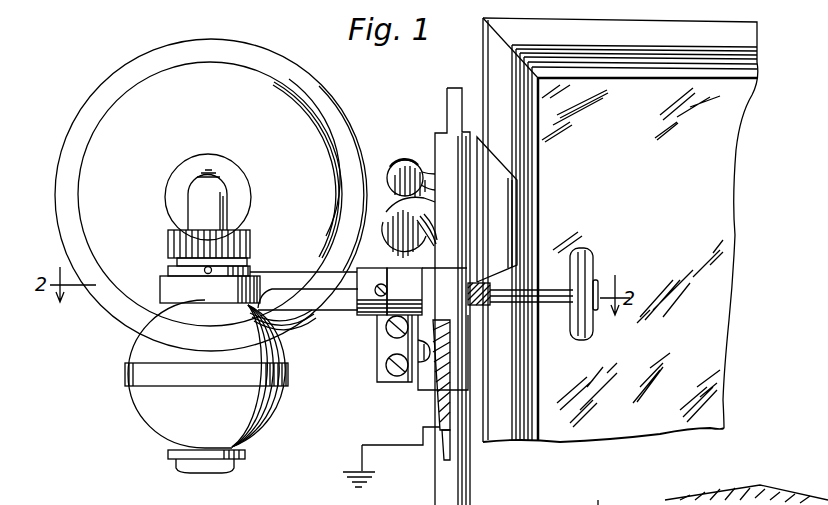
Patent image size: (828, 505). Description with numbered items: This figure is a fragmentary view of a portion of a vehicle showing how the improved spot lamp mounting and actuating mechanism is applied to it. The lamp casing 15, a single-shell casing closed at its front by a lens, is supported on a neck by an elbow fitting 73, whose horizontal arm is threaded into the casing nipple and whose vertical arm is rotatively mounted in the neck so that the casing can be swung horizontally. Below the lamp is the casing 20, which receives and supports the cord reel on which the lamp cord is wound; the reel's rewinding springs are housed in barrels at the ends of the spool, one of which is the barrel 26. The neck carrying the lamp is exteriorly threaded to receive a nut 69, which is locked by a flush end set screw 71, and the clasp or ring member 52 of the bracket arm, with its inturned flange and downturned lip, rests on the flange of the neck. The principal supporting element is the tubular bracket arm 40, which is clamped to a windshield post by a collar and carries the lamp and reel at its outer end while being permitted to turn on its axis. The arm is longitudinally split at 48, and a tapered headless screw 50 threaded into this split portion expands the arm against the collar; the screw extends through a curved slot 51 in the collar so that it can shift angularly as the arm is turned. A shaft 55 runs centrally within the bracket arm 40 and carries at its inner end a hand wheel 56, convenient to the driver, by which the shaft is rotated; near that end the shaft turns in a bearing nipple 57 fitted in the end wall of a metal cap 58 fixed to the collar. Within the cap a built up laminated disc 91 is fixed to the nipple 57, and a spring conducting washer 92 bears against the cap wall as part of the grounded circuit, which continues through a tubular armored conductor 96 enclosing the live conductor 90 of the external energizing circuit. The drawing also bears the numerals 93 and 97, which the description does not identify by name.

The lamp casing 15 is at (307, 142).
The elbow fitting 73 is at (198, 195).
The barrel 26 is at (250, 248).
The nut 69 is at (168, 271).
The flush end set screw 71 is at (208, 276).
The clasp or ring member 52 is at (170, 288).
The casing 20 is at (266, 420).
The tubular bracket arm 40 is at (341, 302).
The longitudinal split 48 is at (320, 290).
The tapered headless screw 50 is at (377, 287).
The metal cap 58 is at (440, 273).
The curved slot 51 is at (384, 268).
The bearing nipple 57 is at (492, 290).
The shaft 55 is at (555, 305).
The hand wheel 56 is at (588, 338).
The terminal bracket 97 is at (385, 366).
The tubular armored conductor 96 is at (440, 410).
The conductor 90 is at (445, 448).
The built up laminated disc 91 is at (466, 466).
The spring conducting washer 92 is at (591, 494).
The door part 93 is at (738, 495).